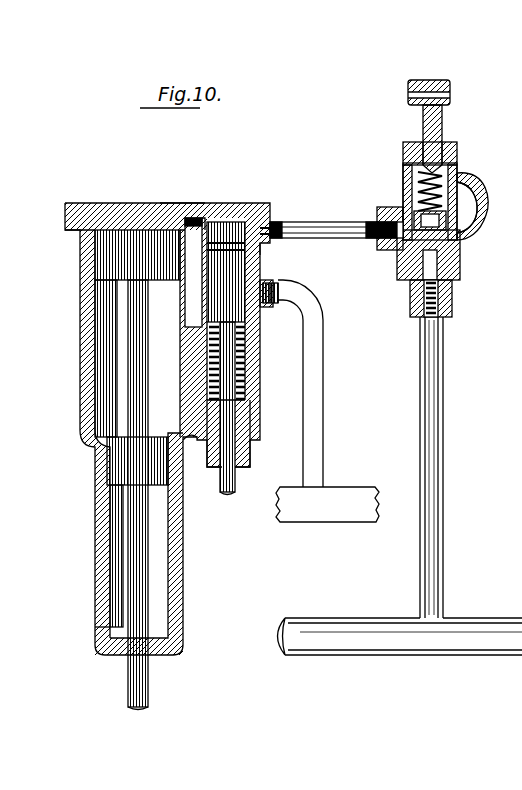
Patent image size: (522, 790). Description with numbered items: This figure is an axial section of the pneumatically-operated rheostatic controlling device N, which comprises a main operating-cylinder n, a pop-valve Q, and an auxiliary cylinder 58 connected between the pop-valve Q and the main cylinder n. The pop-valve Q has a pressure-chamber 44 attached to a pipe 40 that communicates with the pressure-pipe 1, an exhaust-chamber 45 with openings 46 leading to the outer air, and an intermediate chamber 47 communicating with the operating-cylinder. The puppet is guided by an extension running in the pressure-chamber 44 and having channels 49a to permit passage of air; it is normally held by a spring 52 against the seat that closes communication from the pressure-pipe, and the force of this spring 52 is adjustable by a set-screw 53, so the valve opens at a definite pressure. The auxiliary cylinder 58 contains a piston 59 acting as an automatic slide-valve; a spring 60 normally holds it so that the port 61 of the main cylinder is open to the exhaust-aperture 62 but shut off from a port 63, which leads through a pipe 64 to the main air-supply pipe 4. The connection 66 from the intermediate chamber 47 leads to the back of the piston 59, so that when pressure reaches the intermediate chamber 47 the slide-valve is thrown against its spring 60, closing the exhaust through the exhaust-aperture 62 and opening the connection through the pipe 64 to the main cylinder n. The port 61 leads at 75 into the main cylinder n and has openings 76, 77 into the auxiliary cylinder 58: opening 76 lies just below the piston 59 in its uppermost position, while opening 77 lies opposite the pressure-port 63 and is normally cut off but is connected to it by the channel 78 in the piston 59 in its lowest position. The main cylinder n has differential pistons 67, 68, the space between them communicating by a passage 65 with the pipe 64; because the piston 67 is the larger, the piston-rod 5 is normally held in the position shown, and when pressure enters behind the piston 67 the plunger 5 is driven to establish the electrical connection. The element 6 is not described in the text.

The rheostatic controlling device N is at (167, 397).
The port of the main cylinder 61 is at (228, 204).
The entry of port 61 into main cylinder 75 is at (176, 199).
The opening of port 61 into auxiliary cylinder 77 is at (194, 292).
The opening of port 61 into auxiliary cylinder 76 is at (186, 330).
The larger differential piston 67 is at (102, 255).
The main operating-cylinder n is at (117, 355).
The piston-rod 5 is at (137, 560).
The smaller differential piston 68 is at (113, 458).
The piston 59 is at (234, 270).
The channel in piston 78 is at (261, 249).
The exhaust-aperture 62 is at (248, 373).
The auxiliary cylinder 58 is at (238, 348).
The spring 60 is at (236, 384).
The passage 65 is at (183, 440).
The seat 6 is at (190, 440).
The port 63 is at (285, 292).
The pipe 64 is at (318, 340).
The main air-supply pipe 4 is at (327, 504).
The connection 66 is at (302, 226).
The pop-valve Q is at (447, 201).
The set-screw 53 is at (440, 121).
The openings 46 is at (408, 166).
The spring 52 is at (406, 187).
The exhaust-chamber 45 is at (462, 178).
The intermediate chamber 47 is at (462, 243).
The channels 49a is at (437, 268).
The pressure-chamber 44 is at (452, 283).
The pipe 40 is at (441, 414).
The pressure-pipe 1 is at (482, 620).